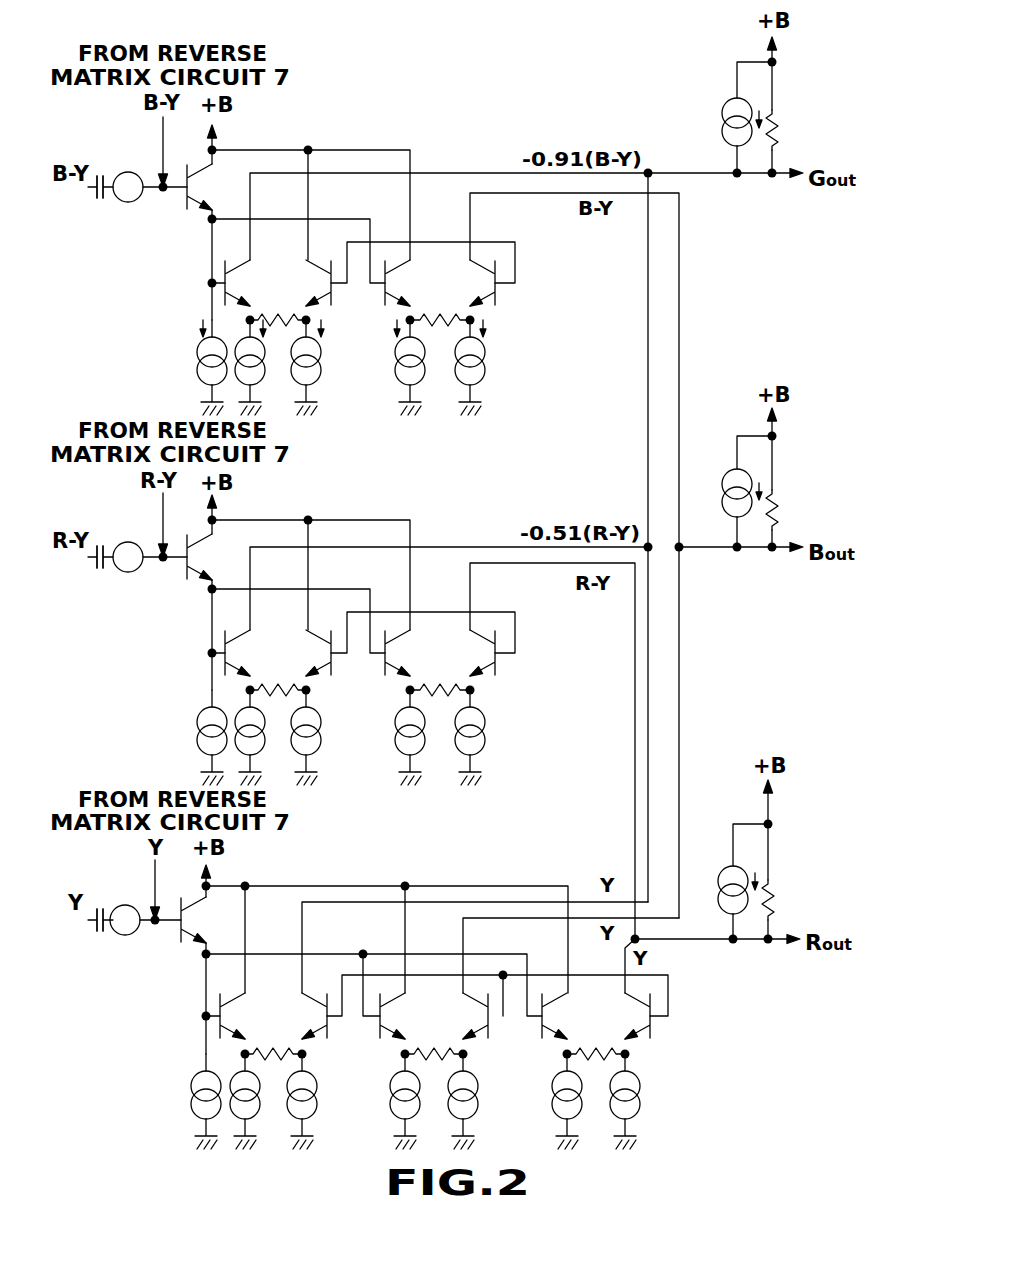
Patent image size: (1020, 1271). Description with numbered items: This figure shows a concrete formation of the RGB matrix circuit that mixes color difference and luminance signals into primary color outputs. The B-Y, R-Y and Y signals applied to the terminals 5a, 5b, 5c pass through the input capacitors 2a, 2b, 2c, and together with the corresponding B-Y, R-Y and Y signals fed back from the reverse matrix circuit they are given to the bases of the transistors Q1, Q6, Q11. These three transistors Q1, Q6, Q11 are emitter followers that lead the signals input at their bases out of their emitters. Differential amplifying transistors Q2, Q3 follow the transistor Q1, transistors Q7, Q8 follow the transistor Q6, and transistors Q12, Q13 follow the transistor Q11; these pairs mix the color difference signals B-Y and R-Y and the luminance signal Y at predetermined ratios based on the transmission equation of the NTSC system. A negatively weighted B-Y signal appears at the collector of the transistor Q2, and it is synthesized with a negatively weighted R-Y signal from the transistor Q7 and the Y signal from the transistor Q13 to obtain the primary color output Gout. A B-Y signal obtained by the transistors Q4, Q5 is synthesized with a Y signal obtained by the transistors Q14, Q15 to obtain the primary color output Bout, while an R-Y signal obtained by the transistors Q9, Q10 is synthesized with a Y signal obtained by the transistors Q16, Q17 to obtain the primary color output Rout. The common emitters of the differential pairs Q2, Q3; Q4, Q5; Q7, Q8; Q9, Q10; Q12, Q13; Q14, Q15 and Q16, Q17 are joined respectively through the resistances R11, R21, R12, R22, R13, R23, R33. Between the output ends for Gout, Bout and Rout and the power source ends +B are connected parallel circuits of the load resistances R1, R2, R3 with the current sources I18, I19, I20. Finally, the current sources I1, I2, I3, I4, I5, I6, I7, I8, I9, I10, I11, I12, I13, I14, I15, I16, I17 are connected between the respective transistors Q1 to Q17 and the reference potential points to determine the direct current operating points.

The input capacitor 2a is at (100, 187).
The input capacitor 2b is at (99, 570).
The input capacitor 2c is at (99, 933).
The terminal 5a is at (130, 203).
The terminal 5b is at (130, 573).
The terminal 5c is at (127, 936).
The transistor Q1 is at (211, 187).
The differential amplifying transistor Q2 is at (244, 283).
The differential amplifying transistor Q3 is at (310, 283).
The transistor Q4 is at (406, 283).
The transistor Q5 is at (476, 283).
The transistor Q6 is at (210, 557).
The differential amplifying transistor Q7 is at (244, 653).
The differential amplifying transistor Q8 is at (310, 653).
The transistor Q9 is at (406, 653).
The transistor Q10 is at (473, 653).
The transistor Q11 is at (212, 920).
The differential amplifying transistor Q12 is at (244, 1016).
The differential amplifying transistor Q13 is at (304, 1016).
The transistor Q14 is at (406, 1016).
The transistor Q15 is at (467, 1016).
The transistor Q16 is at (565, 1016).
The transistor Q17 is at (626, 1016).
The load resistance R1 is at (789, 130).
The load resistance R2 is at (788, 510).
The load resistance R3 is at (784, 900).
The resistance R11 is at (278, 309).
The resistance R21 is at (440, 309).
The resistance R12 is at (278, 679).
The resistance R22 is at (440, 679).
The resistance R13 is at (273, 1043).
The resistance R23 is at (434, 1043).
The resistance R33 is at (596, 1043).
The current source I1 is at (202, 367).
The current source I2 is at (260, 367).
The current source I3 is at (317, 367).
The current source I4 is at (421, 367).
The current source I5 is at (481, 367).
The current source I6 is at (202, 737).
The current source I7 is at (260, 737).
The current source I8 is at (317, 737).
The current source I9 is at (421, 737).
The current source I10 is at (487, 737).
The current source I11 is at (190, 1101).
The current source I12 is at (260, 1101).
The current source I13 is at (318, 1101).
The current source I14 is at (388, 1101).
The current source I15 is at (479, 1101).
The current source I16 is at (551, 1101).
The current source I17 is at (642, 1101).
The current source I18 is at (722, 122).
The current source I19 is at (720, 493).
The current source I20 is at (716, 890).